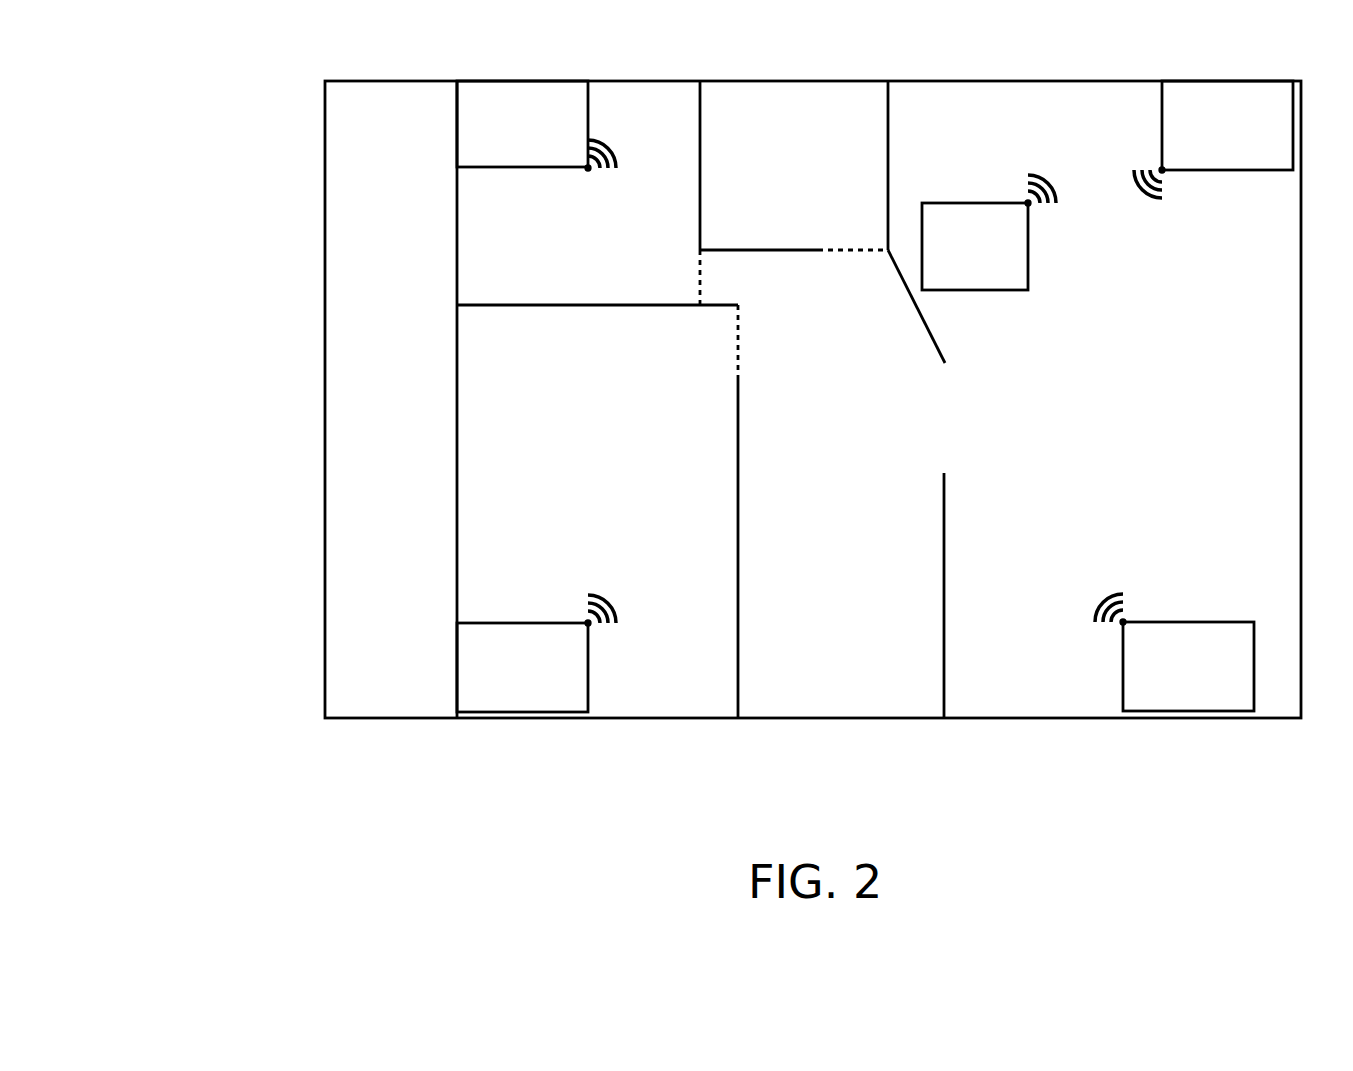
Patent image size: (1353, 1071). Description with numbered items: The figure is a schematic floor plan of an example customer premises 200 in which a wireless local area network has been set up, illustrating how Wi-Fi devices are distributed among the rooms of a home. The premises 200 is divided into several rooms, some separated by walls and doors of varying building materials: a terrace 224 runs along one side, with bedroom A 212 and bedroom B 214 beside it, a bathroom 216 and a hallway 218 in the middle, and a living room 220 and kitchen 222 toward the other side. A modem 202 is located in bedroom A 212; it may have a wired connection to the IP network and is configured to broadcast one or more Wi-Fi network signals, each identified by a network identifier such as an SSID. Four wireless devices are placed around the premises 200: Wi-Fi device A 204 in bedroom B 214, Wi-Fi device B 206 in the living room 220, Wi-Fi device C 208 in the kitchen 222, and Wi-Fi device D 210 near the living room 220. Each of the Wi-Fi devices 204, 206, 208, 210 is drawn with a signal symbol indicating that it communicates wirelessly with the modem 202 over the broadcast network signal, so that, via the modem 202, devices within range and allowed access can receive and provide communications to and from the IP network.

The premises 200 is at (287, 380).
The modem 202 is at (501, 694).
The Wi-Fi device A 204 is at (568, 81).
The Wi-Fi device B 206 is at (1208, 81).
The Wi-Fi device C 208 is at (1197, 622).
The Wi-Fi device D 210 is at (957, 203).
The bedroom A 212 is at (576, 522).
The bedroom B 214 is at (521, 294).
The bathroom 216 is at (774, 192).
The hallway 218 is at (829, 587).
The living room 220 is at (1116, 309).
The kitchen 222 is at (1027, 631).
The terrace 224 is at (371, 421).